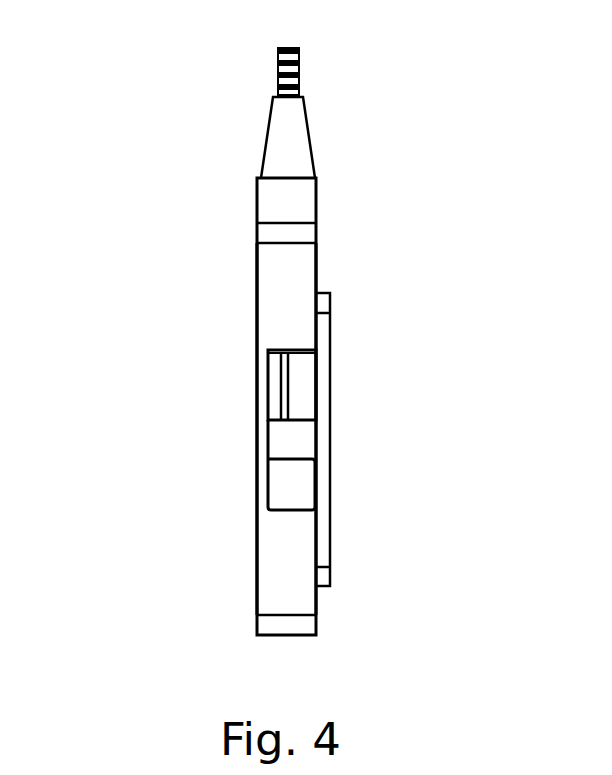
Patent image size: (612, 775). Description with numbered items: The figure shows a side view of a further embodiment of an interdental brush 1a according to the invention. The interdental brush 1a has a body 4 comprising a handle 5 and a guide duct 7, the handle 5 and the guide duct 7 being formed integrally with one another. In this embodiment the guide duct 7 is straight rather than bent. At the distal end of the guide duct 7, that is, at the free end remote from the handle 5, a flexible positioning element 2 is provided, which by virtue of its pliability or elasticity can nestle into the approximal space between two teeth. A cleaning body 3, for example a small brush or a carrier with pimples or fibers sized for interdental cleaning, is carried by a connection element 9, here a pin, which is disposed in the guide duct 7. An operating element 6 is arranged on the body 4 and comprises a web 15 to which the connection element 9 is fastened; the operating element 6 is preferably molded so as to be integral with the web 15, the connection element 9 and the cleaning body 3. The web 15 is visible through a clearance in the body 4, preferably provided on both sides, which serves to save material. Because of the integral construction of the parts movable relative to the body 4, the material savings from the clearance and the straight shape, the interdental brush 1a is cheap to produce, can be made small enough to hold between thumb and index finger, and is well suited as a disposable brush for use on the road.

The interdental brush 1a is at (23, 52).
The positioning element 2 is at (297, 128).
The cleaning body 3 is at (278, 68).
The body 4 is at (177, 203).
The handle 5 is at (268, 533).
The operating element 6 is at (323, 398).
The guide duct 7 is at (297, 357).
The connection element 9 is at (283, 383).
The web 15 is at (297, 442).